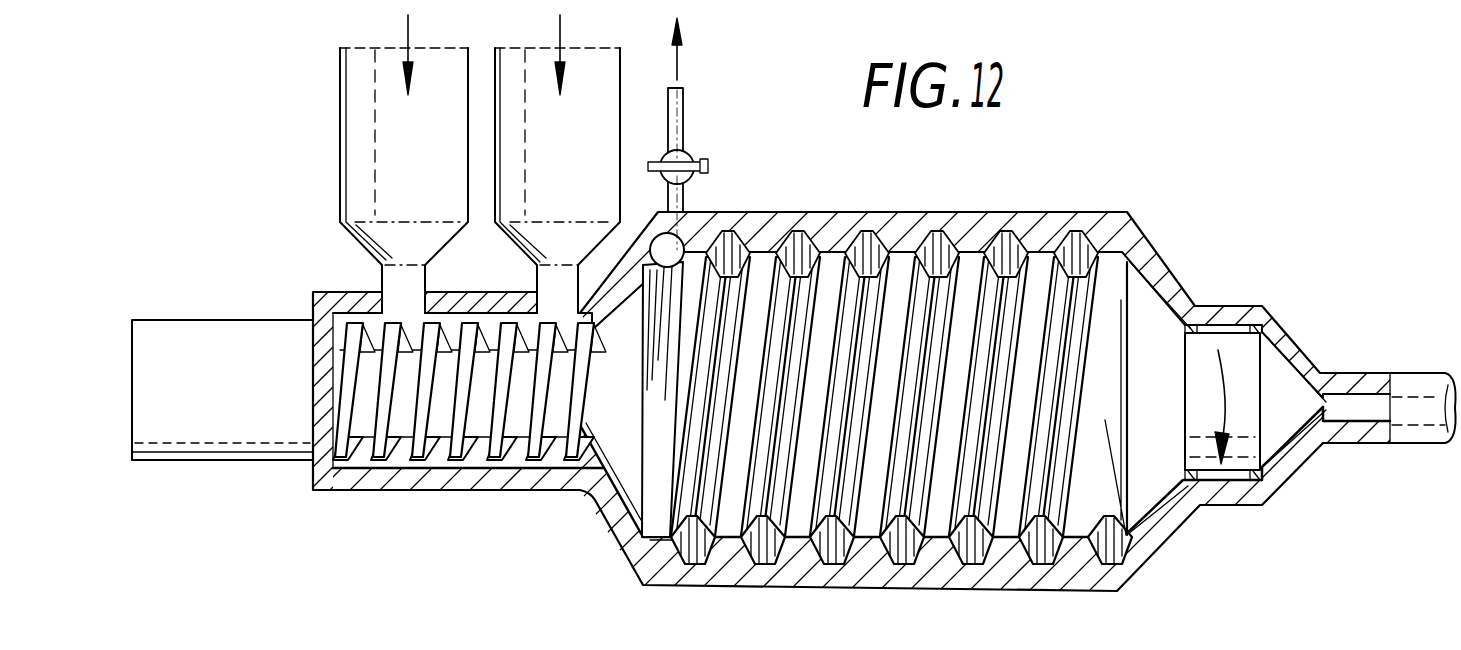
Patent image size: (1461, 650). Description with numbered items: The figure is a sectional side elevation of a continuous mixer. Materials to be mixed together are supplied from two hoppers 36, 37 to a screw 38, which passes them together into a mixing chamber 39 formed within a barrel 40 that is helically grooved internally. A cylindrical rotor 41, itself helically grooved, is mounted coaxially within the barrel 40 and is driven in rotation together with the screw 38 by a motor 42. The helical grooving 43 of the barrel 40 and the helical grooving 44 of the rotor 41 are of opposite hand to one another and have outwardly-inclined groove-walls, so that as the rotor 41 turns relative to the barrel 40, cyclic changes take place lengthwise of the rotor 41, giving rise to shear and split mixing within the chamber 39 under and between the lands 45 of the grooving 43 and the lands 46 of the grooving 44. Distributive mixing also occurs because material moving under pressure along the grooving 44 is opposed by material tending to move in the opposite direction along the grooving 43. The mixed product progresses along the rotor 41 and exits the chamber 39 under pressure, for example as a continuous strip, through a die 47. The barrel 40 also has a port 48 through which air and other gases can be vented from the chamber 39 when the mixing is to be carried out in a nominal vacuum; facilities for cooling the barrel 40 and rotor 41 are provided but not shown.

The hopper 36 is at (395, 77).
The hopper 37 is at (580, 70).
The screw 38 is at (490, 455).
The mixing chamber 39 is at (670, 550).
The barrel 40 is at (845, 218).
The cylindrical rotor 41 is at (1137, 310).
The motor 42 is at (237, 350).
The helical grooving 43 is at (1063, 263).
The helical grooving 44 is at (1023, 250).
The lands 45 is at (965, 267).
The lands 46 is at (932, 262).
The die 47 is at (1350, 368).
The port 48 is at (685, 114).